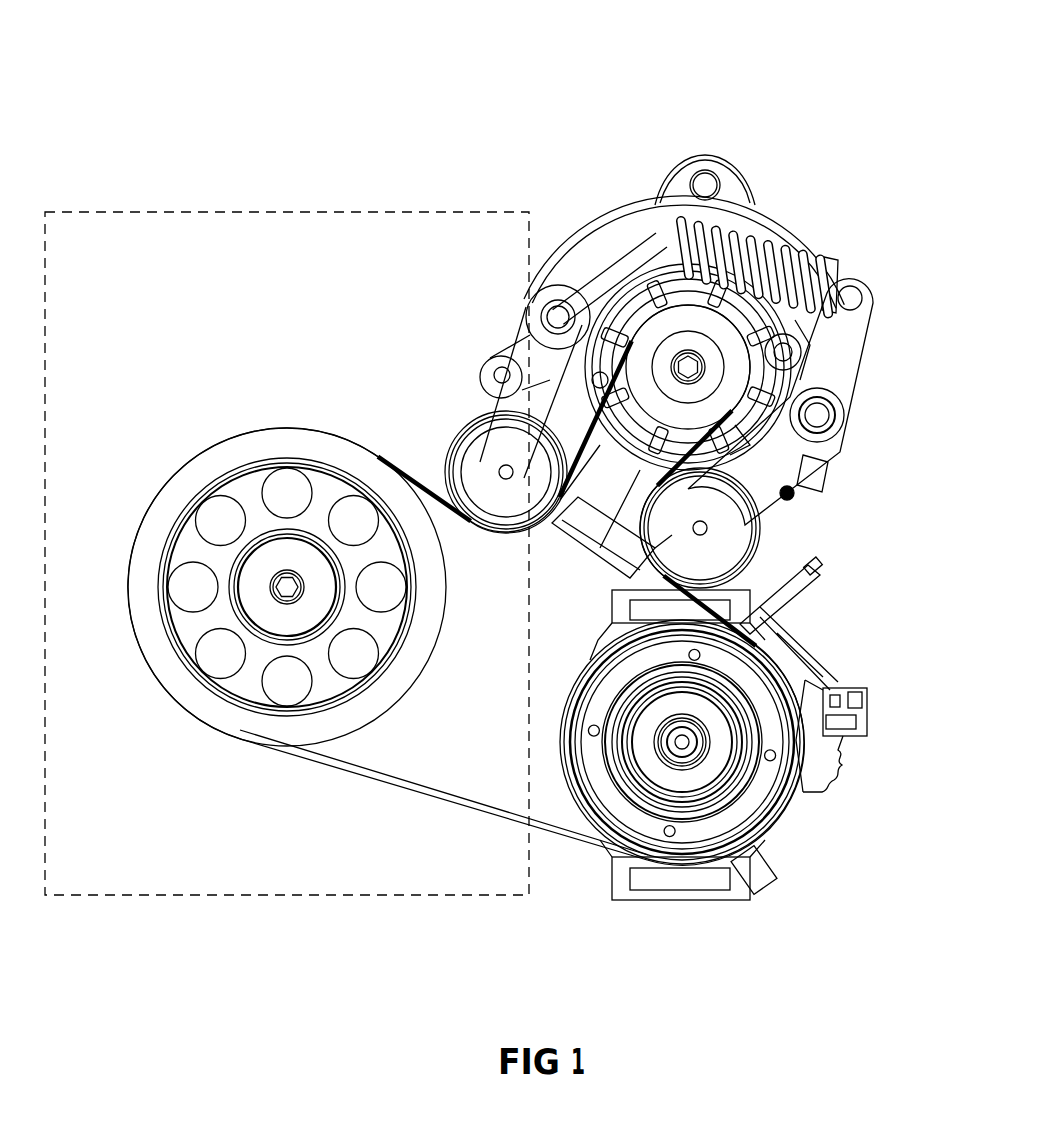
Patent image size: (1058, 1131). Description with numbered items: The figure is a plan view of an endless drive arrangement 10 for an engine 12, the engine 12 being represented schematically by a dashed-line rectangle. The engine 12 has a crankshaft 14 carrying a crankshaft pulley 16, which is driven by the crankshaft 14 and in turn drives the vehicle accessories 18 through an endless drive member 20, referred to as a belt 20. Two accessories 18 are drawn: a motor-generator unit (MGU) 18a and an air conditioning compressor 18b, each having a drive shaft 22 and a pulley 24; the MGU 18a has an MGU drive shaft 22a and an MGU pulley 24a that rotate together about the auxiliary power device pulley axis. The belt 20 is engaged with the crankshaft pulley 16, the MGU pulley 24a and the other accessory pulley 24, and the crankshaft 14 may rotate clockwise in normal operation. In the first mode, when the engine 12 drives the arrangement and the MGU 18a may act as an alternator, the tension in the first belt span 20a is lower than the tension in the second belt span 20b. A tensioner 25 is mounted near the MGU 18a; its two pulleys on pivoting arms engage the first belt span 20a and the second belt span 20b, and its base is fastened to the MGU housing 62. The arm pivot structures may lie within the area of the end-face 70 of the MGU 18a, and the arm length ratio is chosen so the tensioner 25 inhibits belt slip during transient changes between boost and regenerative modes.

The endless drive arrangement 10 is at (410, 123).
The engine 12 is at (153, 212).
The crankshaft 14 is at (263, 558).
The crankshaft pulley 16 is at (238, 442).
The vehicle accessories 18 is at (676, 572).
The motor-generator unit (MGU) 18a is at (753, 333).
The air conditioning compressor 18b is at (683, 895).
The endless drive member (belt) 20 is at (423, 788).
The first belt span 20a is at (430, 487).
The second belt span 20b is at (750, 593).
The drive shaft 22 is at (773, 797).
The MGU drive shaft 22a is at (693, 343).
The pulley 24 is at (707, 772).
The MGU pulley 24a is at (672, 320).
The tensioner 25 is at (598, 203).
The MGU housing 62 is at (792, 332).
The end-face of the auxiliary power device 70 is at (722, 435).